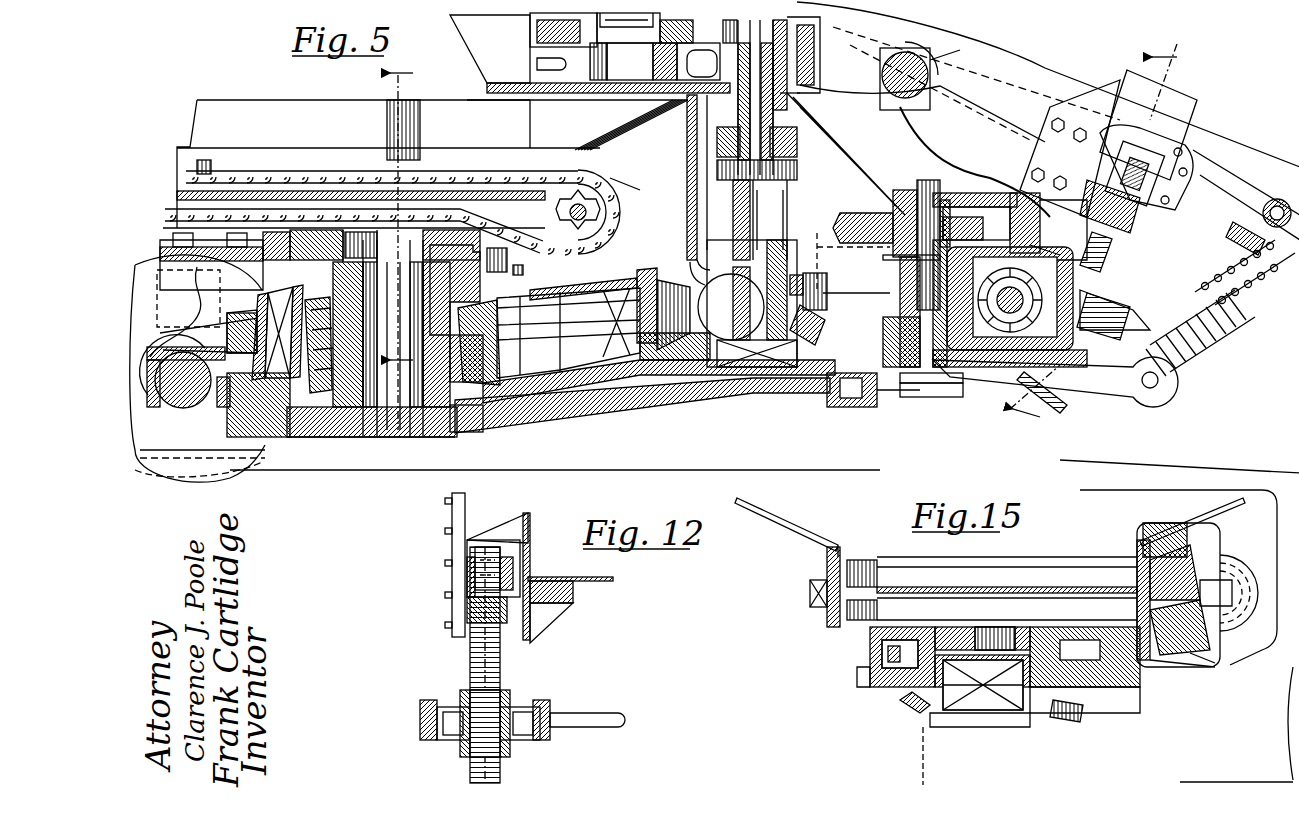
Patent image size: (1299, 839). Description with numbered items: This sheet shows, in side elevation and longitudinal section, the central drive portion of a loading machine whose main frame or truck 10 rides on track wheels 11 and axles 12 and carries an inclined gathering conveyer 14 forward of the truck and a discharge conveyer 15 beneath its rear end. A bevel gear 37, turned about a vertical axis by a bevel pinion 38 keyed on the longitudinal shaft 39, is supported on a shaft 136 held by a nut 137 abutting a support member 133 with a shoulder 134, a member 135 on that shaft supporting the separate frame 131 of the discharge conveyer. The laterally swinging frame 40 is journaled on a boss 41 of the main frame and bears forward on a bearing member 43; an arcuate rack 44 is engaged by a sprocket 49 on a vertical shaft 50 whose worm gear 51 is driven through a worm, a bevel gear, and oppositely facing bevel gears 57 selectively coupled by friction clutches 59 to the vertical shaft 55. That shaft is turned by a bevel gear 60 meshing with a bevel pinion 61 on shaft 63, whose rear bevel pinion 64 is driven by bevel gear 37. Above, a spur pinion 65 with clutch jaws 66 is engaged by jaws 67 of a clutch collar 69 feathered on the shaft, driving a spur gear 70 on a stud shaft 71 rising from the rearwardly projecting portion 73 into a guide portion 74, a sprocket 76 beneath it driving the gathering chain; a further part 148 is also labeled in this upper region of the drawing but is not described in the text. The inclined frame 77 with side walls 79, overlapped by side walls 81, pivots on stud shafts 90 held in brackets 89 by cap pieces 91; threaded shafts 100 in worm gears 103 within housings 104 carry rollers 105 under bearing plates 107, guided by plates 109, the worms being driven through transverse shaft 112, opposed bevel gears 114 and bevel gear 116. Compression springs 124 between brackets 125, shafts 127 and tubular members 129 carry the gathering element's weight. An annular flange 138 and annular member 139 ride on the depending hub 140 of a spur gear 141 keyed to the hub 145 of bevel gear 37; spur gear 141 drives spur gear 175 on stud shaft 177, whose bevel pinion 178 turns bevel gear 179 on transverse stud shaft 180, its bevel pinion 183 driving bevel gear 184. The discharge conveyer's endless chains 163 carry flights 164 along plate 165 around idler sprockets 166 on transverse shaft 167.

In FIG. 5, the main frame or truck 10 is at (335, 436).
In FIG. 5, the track wheels 11 is at (216, 480).
In FIG. 5, the axles 12 is at (185, 410).
In FIG. 5, the gathering conveyer 14 is at (1052, 62).
In FIG. 5, the discharge conveyer 15 is at (264, 100).
In FIG. 5, the bevel gear 37 is at (408, 338).
In FIG. 15, the bevel gear 37 is at (911, 716).
In FIG. 5, the bevel pinion 38 is at (322, 394).
In FIG. 15, the bevel pinion 38 is at (1084, 711).
In FIG. 5, the longitudinally extending shaft 39 is at (162, 256).
In FIG. 5, the swinging frame 40 is at (668, 382).
In FIG. 15, the swinging frame 40 is at (923, 774).
In FIG. 5, the boss 41 is at (443, 431).
In FIG. 5, the bearing member 43 is at (753, 374).
In FIG. 5, the arcuate rack 44 is at (880, 408).
In FIG. 5, the toothed member or sprocket 49 is at (951, 400).
In FIG. 5, the vertical shaft 50 is at (960, 385).
In FIG. 5, the worm gear 51 is at (961, 217).
In FIG. 5, the vertical shaft 55 is at (743, 144).
In FIG. 5, the bevel gears 57 is at (700, 214).
In FIG. 5, the friction clutches 59 is at (840, 193).
In FIG. 5, the bevel gear 60 is at (828, 341).
In FIG. 5, the bevel pinion 61 is at (687, 263).
In FIG. 5, the shaft 63 is at (571, 332).
In FIG. 5, the bevel pinion 64 is at (481, 431).
In FIG. 5, the spur pinion 65 is at (805, 55).
In FIG. 5, the clutch jaws 66 is at (727, 101).
In FIG. 5, the clutch jaws 67 is at (788, 118).
In FIG. 5, the clutch collar 69 is at (791, 144).
In FIG. 5, the spur gear 70 is at (530, 32).
In FIG. 5, the stud shaft 71 is at (620, 78).
In FIG. 5, the rearwardly projecting portion 73 is at (521, 94).
In FIG. 5, the guide portion 74 is at (598, 18).
In FIG. 5, the sprocket 76 is at (537, 63).
In FIG. 5, the inclined frame 77 is at (1230, 222).
In FIG. 12, the inclined frame 77 is at (583, 577).
In FIG. 5, the side walls 79 is at (1281, 162).
In FIG. 12, the side walls 79 is at (531, 522).
In FIG. 5, the side walls 81 is at (450, 16).
In FIG. 5, the brackets 89 is at (880, 62).
In FIG. 5, the stud shafts 90 is at (940, 63).
In FIG. 5, the cap pieces 91 is at (943, 98).
In FIG. 5, the threaded shafts 100 is at (1100, 270).
In FIG. 12, the threaded shafts 100 is at (501, 662).
In FIG. 12, the worm gears 103 is at (453, 698).
In FIG. 5, the housings 104 is at (1135, 241).
In FIG. 12, the housings 104 is at (531, 752).
In FIG. 5, the roller 105 is at (1190, 143).
In FIG. 5, the bearing plates 107 is at (1107, 130).
In FIG. 12, the bearing plates 107 is at (470, 540).
In FIG. 12, the plates 109 is at (452, 585).
In FIG. 12, the transverse shaft 112 is at (590, 718).
In FIG. 5, the bevel gears 114 is at (1031, 251).
In FIG. 5, the bevel gear 116 is at (1015, 332).
In FIG. 5, the compression springs 124 is at (1225, 326).
In FIG. 5, the brackets 125 is at (1130, 401).
In FIG. 5, the shaft 127 is at (1124, 313).
In FIG. 5, the tubular member 129 is at (1247, 293).
In FIG. 5, the frame 131 is at (181, 231).
In FIG. 15, the frame 131 is at (870, 636).
In FIG. 5, the support member 133 is at (310, 236).
In FIG. 15, the support member 133 is at (941, 626).
In FIG. 5, the shoulder 134 is at (377, 173).
In FIG. 15, the shoulder 134 is at (941, 630).
In FIG. 5, the member 135 is at (450, 213).
In FIG. 5, the shaft 136 is at (390, 436).
In FIG. 15, the shaft 136 is at (1036, 626).
In FIG. 5, the nut 137 is at (412, 232).
In FIG. 15, the nut 137 is at (996, 628).
In FIG. 5, the annular flange 138 is at (520, 266).
In FIG. 15, the annular flange 138 is at (866, 668).
In FIG. 5, the annular member 139 is at (560, 316).
In FIG. 15, the annular member 139 is at (861, 684).
In FIG. 5, the depending hub 140 is at (333, 250).
In FIG. 15, the depending hub 140 is at (906, 691).
In FIG. 5, the spur gear 141 is at (298, 238).
In FIG. 15, the spur gear 141 is at (885, 658).
In FIG. 5, the upwardly extending hub 145 is at (345, 250).
In FIG. 15, the upwardly extending hub 145 is at (955, 712).
In FIG. 5, the cover 148 is at (468, 101).
In FIG. 5, the endless chains 163 is at (202, 168).
In FIG. 15, the endless chains 163 is at (860, 570).
In FIG. 5, the flights 164 is at (280, 168).
In FIG. 15, the flights 164 is at (920, 566).
In FIG. 5, the plate 165 is at (196, 197).
In FIG. 5, the idler sprockets 166 is at (566, 213).
In FIG. 5, the transverse shaft 167 is at (604, 186).
In FIG. 15, the spur gear 175 is at (1196, 691).
In FIG. 15, the stud shaft 177 is at (1151, 641).
In FIG. 15, the bevel pinion 178 is at (1191, 654).
In FIG. 15, the bevel gear 179 is at (1163, 553).
In FIG. 15, the transverse stud shaft 180 is at (1206, 593).
In FIG. 15, the bevel pinion 183 is at (1183, 570).
In FIG. 15, the bevel gear 184 is at (1206, 644).